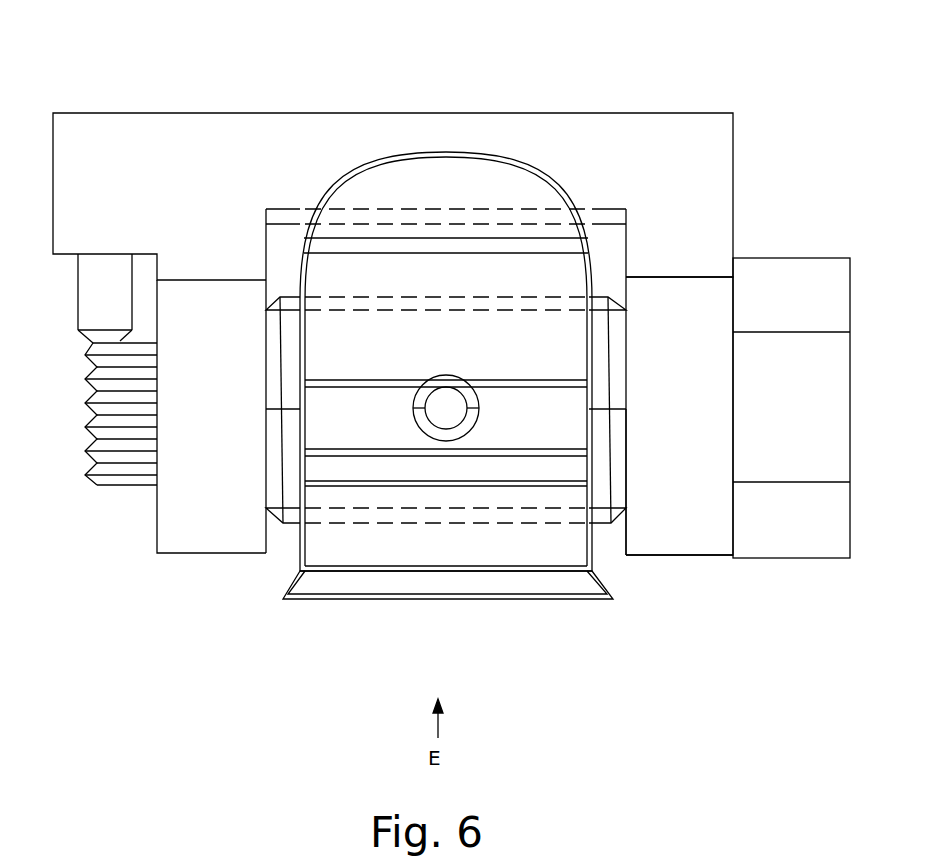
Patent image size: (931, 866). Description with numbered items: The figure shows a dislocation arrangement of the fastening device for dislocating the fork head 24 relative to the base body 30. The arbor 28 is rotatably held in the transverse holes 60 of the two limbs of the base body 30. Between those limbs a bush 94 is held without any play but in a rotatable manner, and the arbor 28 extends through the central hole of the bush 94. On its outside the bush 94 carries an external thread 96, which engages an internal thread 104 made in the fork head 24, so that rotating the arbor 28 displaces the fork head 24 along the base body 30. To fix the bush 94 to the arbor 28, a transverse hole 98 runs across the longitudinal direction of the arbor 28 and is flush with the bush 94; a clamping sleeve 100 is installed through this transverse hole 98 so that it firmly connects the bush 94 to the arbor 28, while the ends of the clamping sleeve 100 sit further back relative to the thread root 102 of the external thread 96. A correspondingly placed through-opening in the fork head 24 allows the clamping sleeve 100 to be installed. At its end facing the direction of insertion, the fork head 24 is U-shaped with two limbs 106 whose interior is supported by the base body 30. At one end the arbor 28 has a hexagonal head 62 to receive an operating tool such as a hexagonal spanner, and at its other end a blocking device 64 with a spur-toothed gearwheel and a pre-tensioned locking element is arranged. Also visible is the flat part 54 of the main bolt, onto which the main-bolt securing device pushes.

The fork head 24 is at (342, 585).
The arbor 28 is at (131, 584).
The base body 30 is at (670, 162).
The flat part 54 is at (658, 535).
The transverse hole 60 is at (710, 535).
The hexagonal head 62 is at (807, 533).
The blocking device 64 is at (84, 531).
The bush 94 is at (600, 503).
The external thread 96 is at (606, 303).
The transverse hole 98 is at (438, 382).
The clamping sleeve 100 is at (470, 418).
The thread root 102 is at (295, 300).
The internal thread 104 is at (410, 512).
The limbs 106 is at (445, 197).